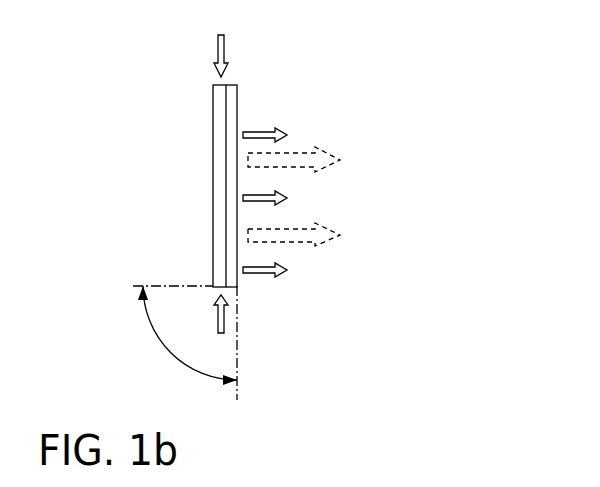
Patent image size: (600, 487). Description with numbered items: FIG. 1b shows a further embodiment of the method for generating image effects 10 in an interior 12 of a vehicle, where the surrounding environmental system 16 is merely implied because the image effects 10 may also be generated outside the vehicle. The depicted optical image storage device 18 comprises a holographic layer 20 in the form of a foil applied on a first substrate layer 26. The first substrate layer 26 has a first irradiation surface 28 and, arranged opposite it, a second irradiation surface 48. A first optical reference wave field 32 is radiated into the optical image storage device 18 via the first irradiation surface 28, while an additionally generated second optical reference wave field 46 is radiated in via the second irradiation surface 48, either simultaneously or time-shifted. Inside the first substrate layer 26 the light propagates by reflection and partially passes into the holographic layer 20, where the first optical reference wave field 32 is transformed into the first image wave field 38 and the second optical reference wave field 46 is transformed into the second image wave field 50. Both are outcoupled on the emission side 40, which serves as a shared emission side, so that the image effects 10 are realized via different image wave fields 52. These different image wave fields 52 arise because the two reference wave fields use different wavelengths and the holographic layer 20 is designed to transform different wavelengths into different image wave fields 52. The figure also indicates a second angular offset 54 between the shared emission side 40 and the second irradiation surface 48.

The image effects 10 is at (335, 118).
The interior 12 is at (476, 87).
The environmental system 16 is at (512, 102).
The optical image storage device 18 is at (165, 185).
The holographic layer 20 is at (240, 101).
The first substrate layer 26 is at (220, 255).
The first irradiation surface 28 is at (220, 85).
The first optical reference wave field 32 is at (221, 47).
The first image wave field 38 is at (301, 293).
The emission side 40 is at (360, 135).
The second optical reference wave field 46 is at (221, 323).
The second irradiation surface 48 is at (220, 286).
The second image wave field 50 is at (292, 234).
The different image wave fields 52 is at (358, 237).
The second angular offset 54 is at (167, 350).